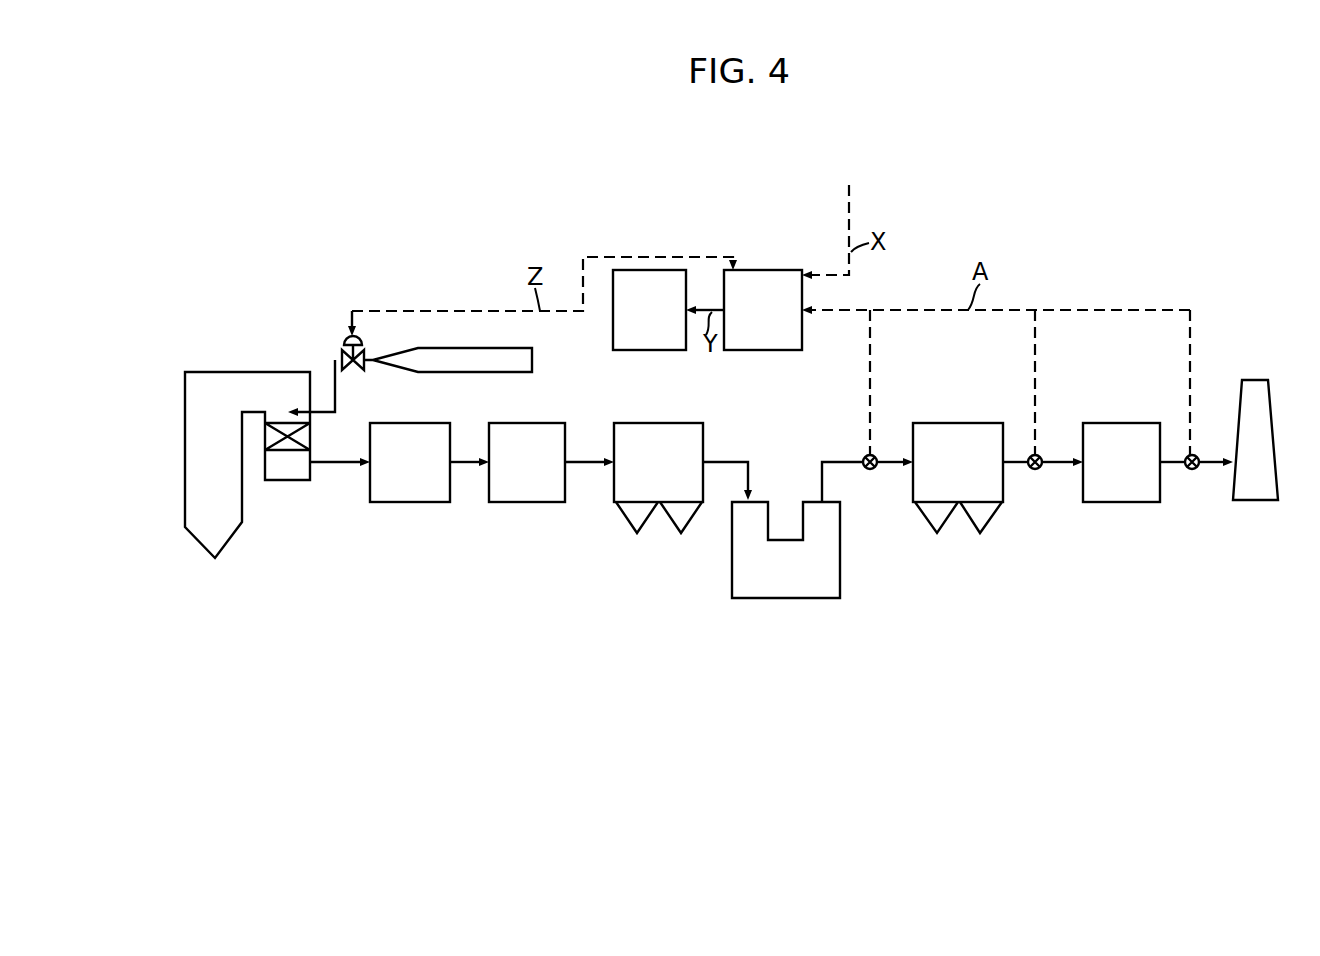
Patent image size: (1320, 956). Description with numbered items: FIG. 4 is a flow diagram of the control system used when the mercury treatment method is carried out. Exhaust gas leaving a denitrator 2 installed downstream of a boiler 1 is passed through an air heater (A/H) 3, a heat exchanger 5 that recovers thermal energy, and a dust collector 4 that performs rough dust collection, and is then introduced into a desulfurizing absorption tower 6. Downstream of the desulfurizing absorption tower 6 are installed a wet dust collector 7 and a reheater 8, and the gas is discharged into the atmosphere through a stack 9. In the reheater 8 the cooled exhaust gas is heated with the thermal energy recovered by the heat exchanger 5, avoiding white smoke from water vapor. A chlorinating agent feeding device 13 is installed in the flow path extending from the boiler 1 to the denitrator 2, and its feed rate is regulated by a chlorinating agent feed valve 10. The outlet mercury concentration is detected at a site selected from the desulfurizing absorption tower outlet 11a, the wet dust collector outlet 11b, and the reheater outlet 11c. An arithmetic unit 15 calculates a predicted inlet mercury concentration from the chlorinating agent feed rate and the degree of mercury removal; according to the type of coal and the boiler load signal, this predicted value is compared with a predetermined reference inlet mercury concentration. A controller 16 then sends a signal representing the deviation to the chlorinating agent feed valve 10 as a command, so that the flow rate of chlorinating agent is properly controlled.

The boiler 1 is at (196, 545).
The denitrator 2 is at (278, 452).
The air heater (A/H) 3 is at (409, 502).
The dust collector 4 is at (627, 520).
The heat exchanger 5 is at (492, 423).
The desulfurizing absorption tower 6 is at (753, 598).
The wet dust collector 7 is at (930, 523).
The reheater 8 is at (1083, 493).
The stack 9 is at (1268, 500).
The chlorinating agent feed valve 10 is at (353, 372).
The desulfurizing absorption tower outlet 11a is at (866, 455).
The wet dust collector outlet 11b is at (1032, 455).
The reheater outlet 11c is at (1190, 455).
The chlorinating agent feeding device 13 is at (452, 348).
The arithmetic unit 15 is at (741, 270).
The controller 16 is at (632, 350).